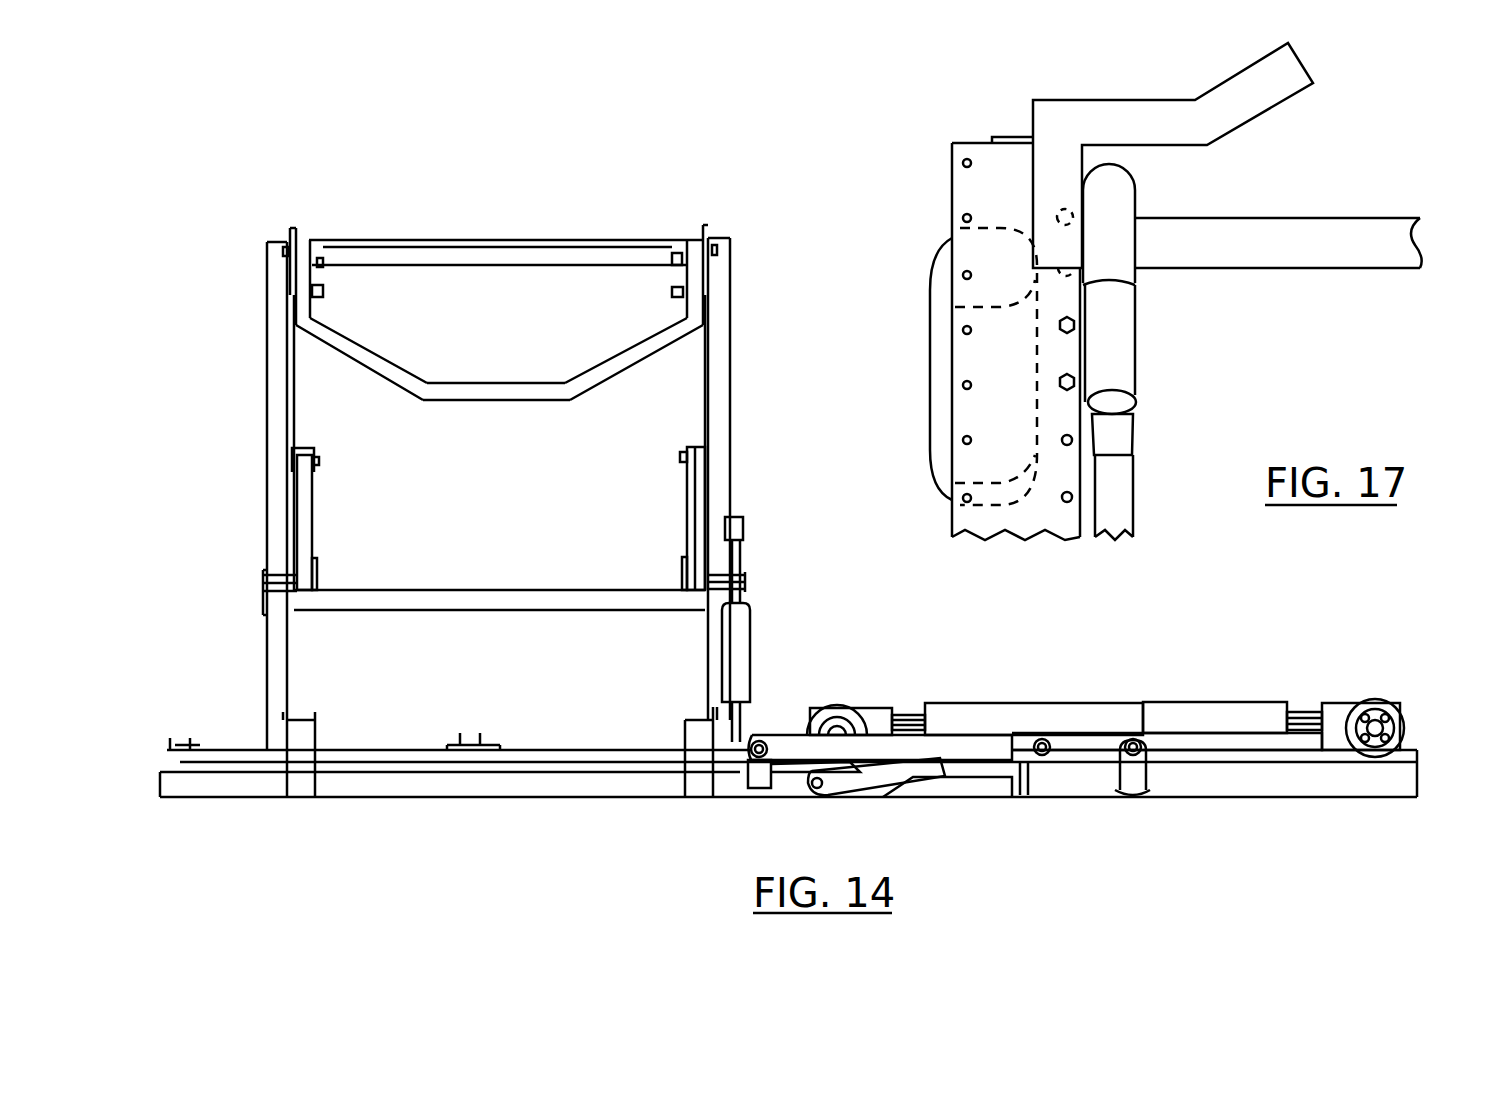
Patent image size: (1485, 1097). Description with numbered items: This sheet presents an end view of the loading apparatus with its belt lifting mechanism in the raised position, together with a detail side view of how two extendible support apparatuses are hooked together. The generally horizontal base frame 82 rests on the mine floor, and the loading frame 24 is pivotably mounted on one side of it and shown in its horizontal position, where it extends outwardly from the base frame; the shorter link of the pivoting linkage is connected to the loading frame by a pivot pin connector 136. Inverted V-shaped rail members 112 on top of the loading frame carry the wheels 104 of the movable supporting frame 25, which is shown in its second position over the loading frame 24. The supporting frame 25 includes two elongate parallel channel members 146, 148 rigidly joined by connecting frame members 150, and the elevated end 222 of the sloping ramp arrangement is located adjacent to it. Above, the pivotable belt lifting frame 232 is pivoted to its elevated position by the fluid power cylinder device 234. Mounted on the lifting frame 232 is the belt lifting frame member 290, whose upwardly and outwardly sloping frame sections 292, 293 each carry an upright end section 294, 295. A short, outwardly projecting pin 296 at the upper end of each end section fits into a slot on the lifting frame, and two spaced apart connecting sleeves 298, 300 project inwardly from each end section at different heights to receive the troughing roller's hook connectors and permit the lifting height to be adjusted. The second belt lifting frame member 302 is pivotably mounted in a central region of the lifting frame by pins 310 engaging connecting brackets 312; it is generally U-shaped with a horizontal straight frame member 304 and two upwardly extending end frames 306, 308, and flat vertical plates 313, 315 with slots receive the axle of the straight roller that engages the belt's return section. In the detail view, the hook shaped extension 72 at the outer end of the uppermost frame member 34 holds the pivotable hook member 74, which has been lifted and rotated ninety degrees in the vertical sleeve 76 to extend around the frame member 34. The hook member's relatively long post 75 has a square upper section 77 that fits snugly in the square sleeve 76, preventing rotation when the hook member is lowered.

In FIG. 14, the base frame 82 is at (500, 783).
In FIG. 14, the inverted V-shaped rail member 112 is at (1275, 757).
In FIG. 14, the upright end section 294 is at (300, 275).
In FIG. 14, the belt lifting frame 232 is at (722, 470).
In FIG. 14, the belt lifting frame member 290 is at (508, 392).
In FIG. 14, the sloping frame section 292 is at (367, 358).
In FIG. 14, the sloping frame section 293 is at (635, 352).
In FIG. 14, the outwardly projecting pin 296 is at (283, 248).
In FIG. 14, the connecting sleeve 298 is at (320, 258).
In FIG. 14, the upright end section 295 is at (695, 273).
In FIG. 14, the connecting sleeve 300 is at (325, 292).
In FIG. 14, the upwardly extending end frame 306 is at (300, 521).
In FIG. 14, the connecting bracket 312 is at (318, 452).
In FIG. 14, the pin 310 is at (318, 462).
In FIG. 14, the flat vertical plate 313 is at (316, 572).
In FIG. 14, the upwardly extending end frame 308 is at (693, 497).
In FIG. 14, the flat vertical plate 315 is at (682, 566).
In FIG. 14, the second belt lifting frame member 302 is at (466, 597).
In FIG. 14, the horizontal straight frame member 304 is at (563, 597).
In FIG. 14, the fluid power cylinder device 234 is at (752, 645).
In FIG. 14, the elevated end 222 is at (318, 718).
In FIG. 14, the loading frame 24 is at (1162, 780).
In FIG. 14, the pivot pin connector 136 is at (1140, 738).
In FIG. 14, the channel member 148 is at (908, 712).
In FIG. 14, the connecting frame member 150 is at (995, 722).
In FIG. 14, the supporting frame 25 is at (1218, 717).
In FIG. 14, the channel member 146 is at (1305, 712).
In FIG. 14, the wheel 104 is at (1400, 722).
In FIG. 17, the hook shaped extension 72 is at (1143, 112).
In FIG. 17, the pivotable hook member 74 is at (1130, 190).
In FIG. 17, the frame member 34 is at (1290, 232).
In FIG. 17, the vertical sleeve 76 is at (1137, 358).
In FIG. 17, the upper section 77 is at (1117, 431).
In FIG. 17, the post 75 is at (1122, 500).